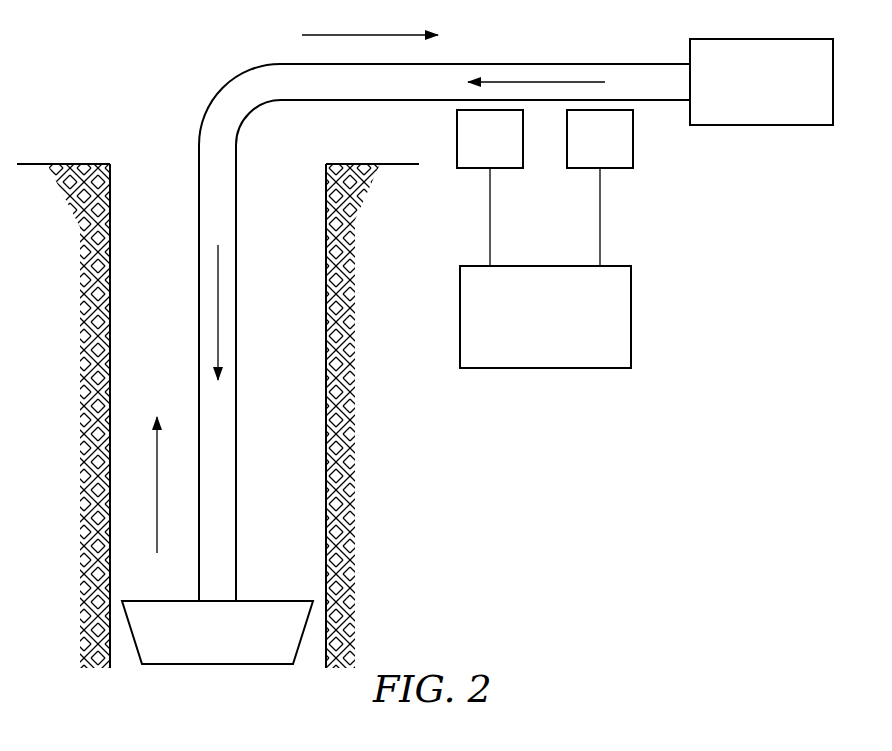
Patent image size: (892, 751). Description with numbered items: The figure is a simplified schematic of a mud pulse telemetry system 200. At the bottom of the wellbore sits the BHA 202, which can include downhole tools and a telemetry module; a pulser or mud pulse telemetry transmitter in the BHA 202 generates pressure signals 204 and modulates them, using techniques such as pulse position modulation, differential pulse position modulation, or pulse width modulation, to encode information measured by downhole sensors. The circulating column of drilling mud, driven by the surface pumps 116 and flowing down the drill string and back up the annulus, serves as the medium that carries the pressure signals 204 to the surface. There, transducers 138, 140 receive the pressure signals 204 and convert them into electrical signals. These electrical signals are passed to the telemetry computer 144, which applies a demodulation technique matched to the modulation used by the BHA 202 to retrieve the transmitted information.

The mud pulse telemetry system 200 is at (136, 18).
The pumps 116 is at (761, 82).
The transducer 138 is at (490, 188).
The transducer 140 is at (600, 188).
The telemetry computer 144 is at (545, 317).
The BHA 202 is at (217, 646).
The pressure signals 204 is at (157, 487).